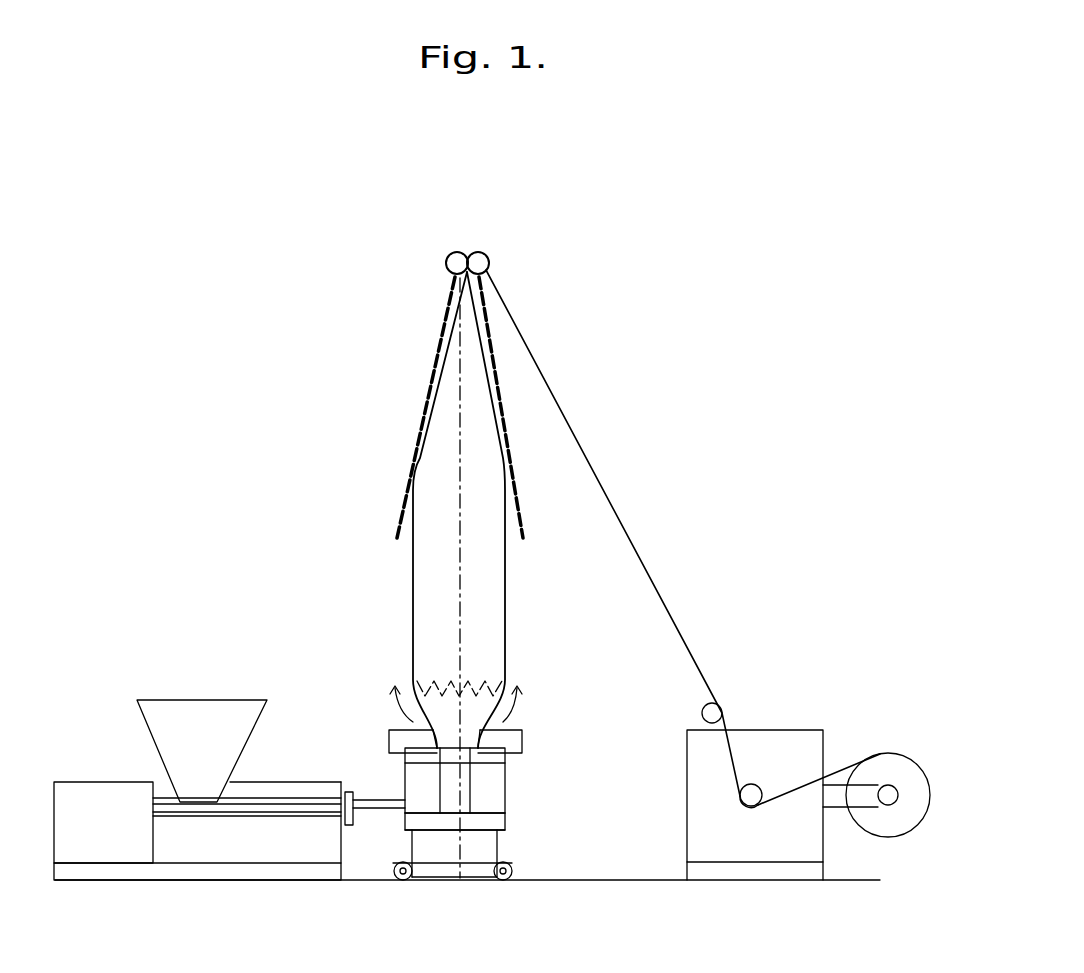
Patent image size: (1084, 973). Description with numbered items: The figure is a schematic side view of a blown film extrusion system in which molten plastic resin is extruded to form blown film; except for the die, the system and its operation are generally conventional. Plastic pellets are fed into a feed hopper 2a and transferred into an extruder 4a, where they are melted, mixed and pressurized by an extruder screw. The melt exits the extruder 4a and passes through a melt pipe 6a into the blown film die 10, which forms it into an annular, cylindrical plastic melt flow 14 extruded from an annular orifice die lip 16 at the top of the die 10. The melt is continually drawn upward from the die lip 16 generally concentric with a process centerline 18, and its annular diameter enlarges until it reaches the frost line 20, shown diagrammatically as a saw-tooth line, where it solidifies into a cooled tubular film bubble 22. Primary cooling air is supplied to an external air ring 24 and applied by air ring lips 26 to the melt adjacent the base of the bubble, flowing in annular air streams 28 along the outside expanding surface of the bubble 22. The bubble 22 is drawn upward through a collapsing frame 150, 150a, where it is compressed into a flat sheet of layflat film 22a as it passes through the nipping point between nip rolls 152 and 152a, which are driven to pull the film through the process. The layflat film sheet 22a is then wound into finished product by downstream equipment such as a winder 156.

The feed hopper 2a is at (186, 727).
The extruder 4a is at (197, 854).
The melt pipe 6a is at (337, 859).
The blown film die 10 is at (525, 836).
The annular cylindrical plastic melt flow 14 is at (518, 825).
The annular orifice die lip 16 is at (391, 779).
The process centerline 18 is at (394, 578).
The frost line 20 is at (504, 654).
The tubular film bubble 22 is at (498, 510).
The flat sheet of film 22a is at (683, 539).
The external air ring 24 is at (508, 762).
The air ring lips 26 is at (395, 726).
The annular air streams 28 is at (511, 715).
The collapsing frame 150 is at (367, 407).
The collapsing frame 150a is at (594, 407).
The nip roll 152 is at (411, 247).
The nip roll 152a is at (534, 247).
The winder 156 is at (808, 782).